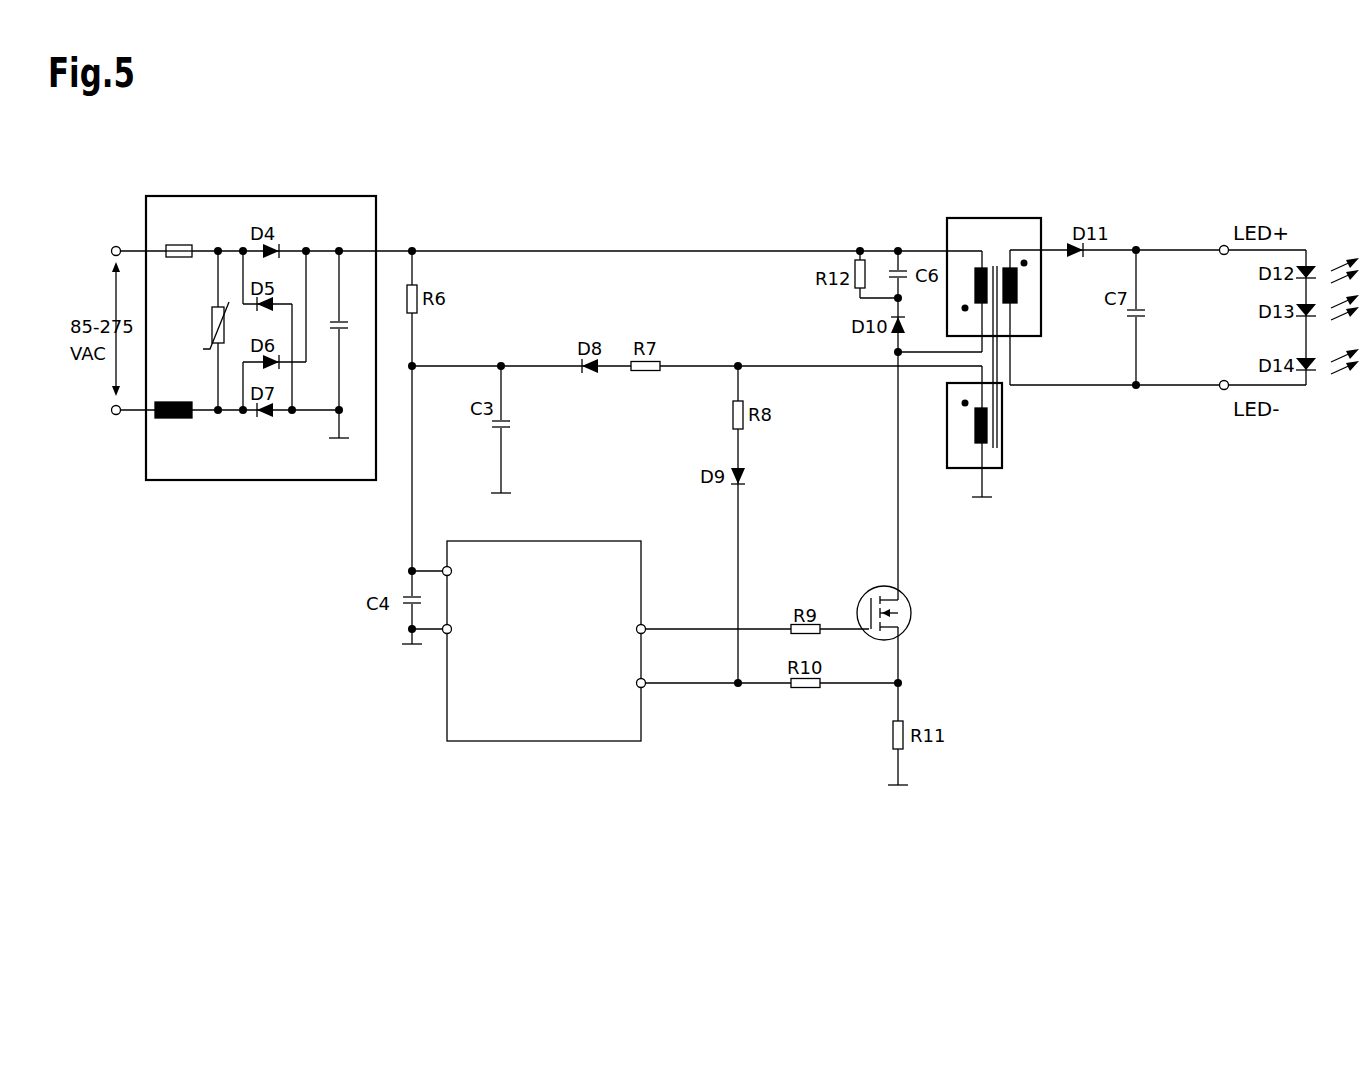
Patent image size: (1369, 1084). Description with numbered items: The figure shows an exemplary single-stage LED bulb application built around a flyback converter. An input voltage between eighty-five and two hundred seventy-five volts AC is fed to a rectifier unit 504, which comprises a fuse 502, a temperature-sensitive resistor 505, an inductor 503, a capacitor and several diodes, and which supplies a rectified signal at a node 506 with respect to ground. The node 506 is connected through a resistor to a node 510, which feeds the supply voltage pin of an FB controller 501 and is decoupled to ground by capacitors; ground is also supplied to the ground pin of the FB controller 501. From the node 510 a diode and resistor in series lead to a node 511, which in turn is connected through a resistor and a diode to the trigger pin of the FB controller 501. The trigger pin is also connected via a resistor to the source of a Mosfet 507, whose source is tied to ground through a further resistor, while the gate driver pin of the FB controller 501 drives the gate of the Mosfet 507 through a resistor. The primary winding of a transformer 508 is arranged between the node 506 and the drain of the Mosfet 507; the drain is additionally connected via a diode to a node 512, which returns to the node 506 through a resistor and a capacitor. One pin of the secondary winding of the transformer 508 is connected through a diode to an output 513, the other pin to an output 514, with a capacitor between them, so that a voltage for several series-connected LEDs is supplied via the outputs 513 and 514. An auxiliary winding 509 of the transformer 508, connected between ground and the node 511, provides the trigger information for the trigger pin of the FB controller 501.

The FB controller 501 is at (525, 741).
The fuse 502 is at (180, 240).
The inductor 503 is at (172, 424).
The rectifier unit 504 is at (168, 480).
The temperature-sensitive resistor 505 is at (194, 325).
The node 506 is at (412, 240).
The Mosfet 507 is at (905, 613).
The transformer 508 is at (975, 218).
The auxiliary winding 509 is at (951, 468).
The node 510 is at (431, 355).
The node 511 is at (737, 355).
The node 512 is at (920, 299).
The output 513 is at (1207, 241).
The output 514 is at (1208, 399).